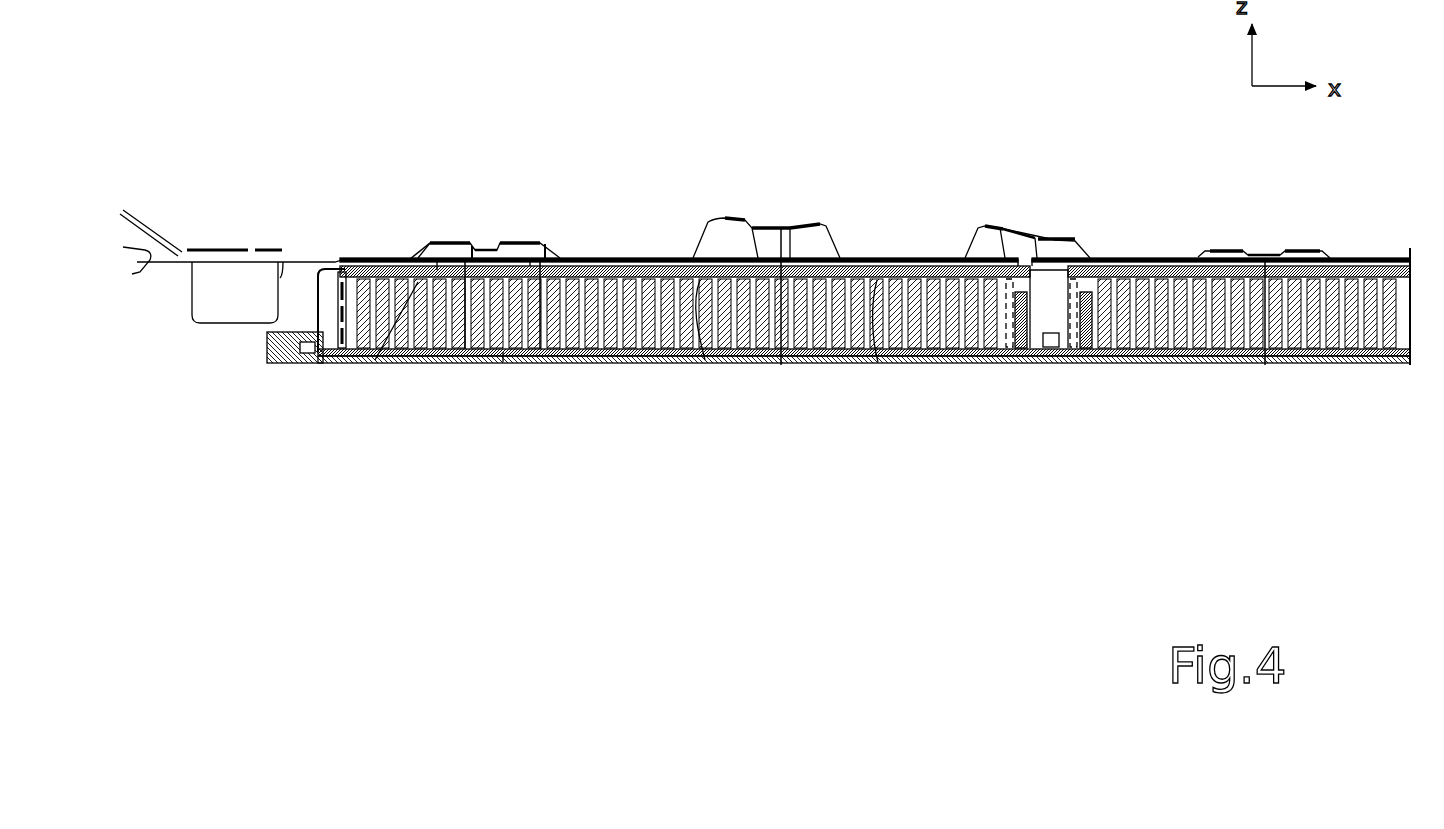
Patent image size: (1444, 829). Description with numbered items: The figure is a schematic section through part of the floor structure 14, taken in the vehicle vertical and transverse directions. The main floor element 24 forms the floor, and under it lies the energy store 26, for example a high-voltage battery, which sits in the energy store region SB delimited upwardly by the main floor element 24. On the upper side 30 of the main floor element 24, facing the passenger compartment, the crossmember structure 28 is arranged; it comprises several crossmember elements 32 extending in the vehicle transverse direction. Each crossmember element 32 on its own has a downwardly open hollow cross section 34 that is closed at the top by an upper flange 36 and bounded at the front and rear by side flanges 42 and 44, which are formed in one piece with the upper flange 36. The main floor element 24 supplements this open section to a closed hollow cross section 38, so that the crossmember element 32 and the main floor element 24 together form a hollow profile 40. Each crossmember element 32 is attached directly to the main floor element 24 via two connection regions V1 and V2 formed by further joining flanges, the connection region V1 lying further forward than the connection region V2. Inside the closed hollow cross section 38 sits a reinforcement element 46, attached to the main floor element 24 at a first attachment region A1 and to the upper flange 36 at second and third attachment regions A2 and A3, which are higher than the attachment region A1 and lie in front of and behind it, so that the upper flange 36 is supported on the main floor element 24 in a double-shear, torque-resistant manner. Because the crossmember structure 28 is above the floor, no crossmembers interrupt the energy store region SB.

The floor structure 14 is at (440, 362).
The main floor element 24 is at (375, 258).
The energy store 26 is at (681, 362).
The crossmember structure 28 is at (1332, 250).
The upper side 30 is at (650, 256).
The crossmember element 32 is at (547, 236).
The hollow cross section 34 is at (541, 362).
The upper flange 36 is at (490, 246).
The closed hollow cross section 38 is at (375, 360).
The profile 40 is at (464, 349).
The side flange 42 is at (422, 258).
The side flange 44 is at (570, 250).
The reinforcement element 46 is at (465, 238).
The first attachment region A1 is at (503, 362).
The second attachment region A2 is at (437, 262).
The third attachment region A3 is at (530, 258).
The connection region V1 is at (705, 360).
The connection region V2 is at (878, 362).
The energy store region SB is at (288, 324).